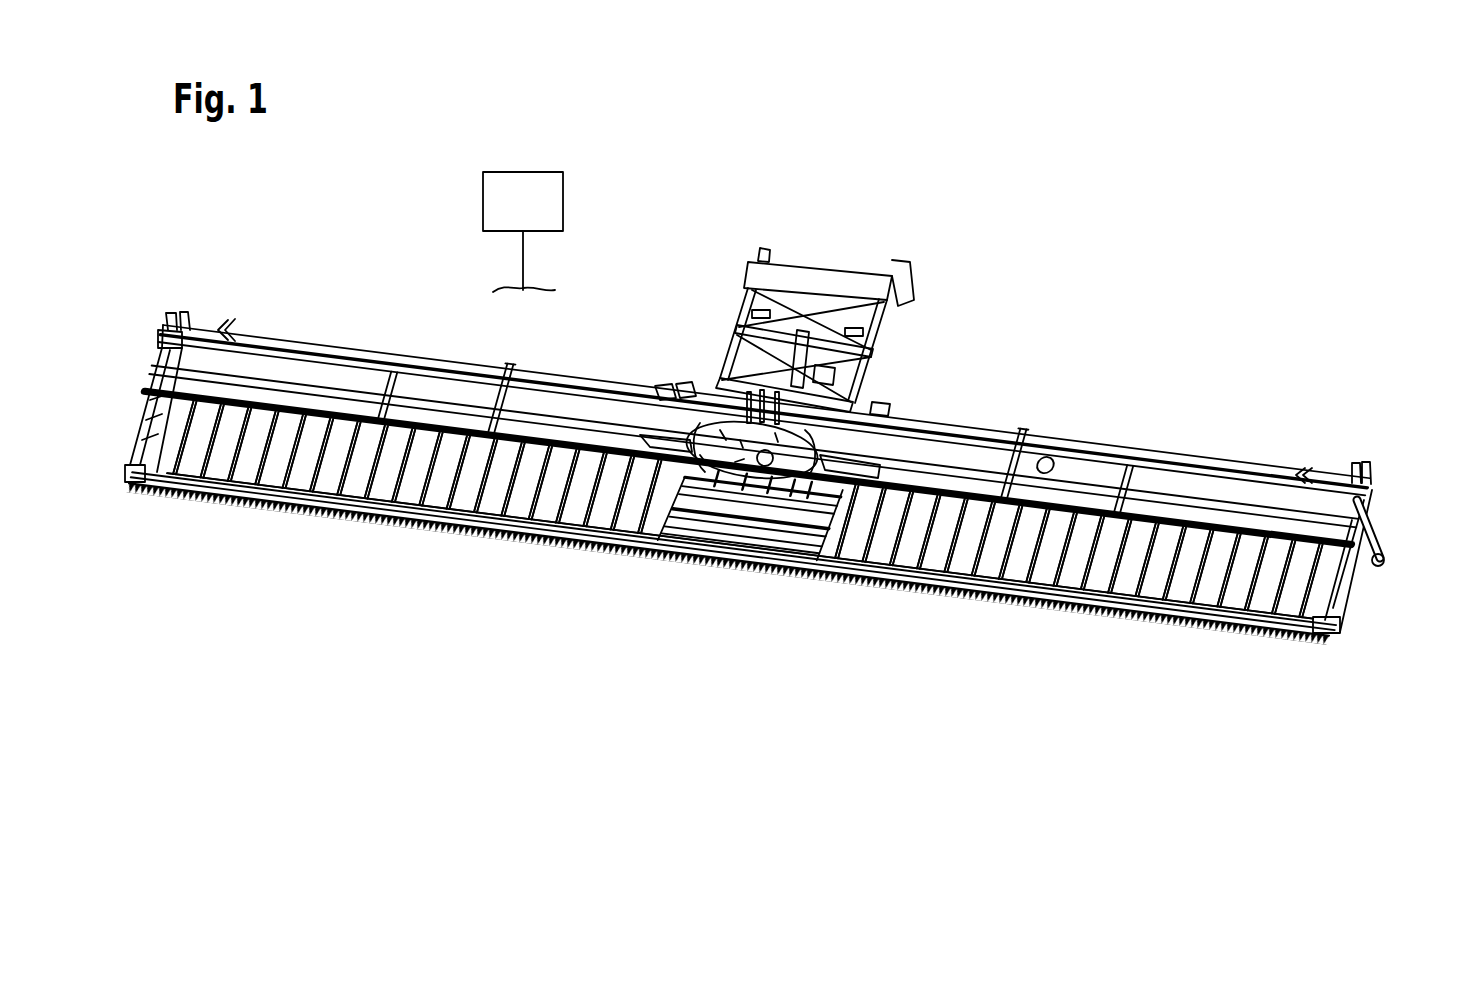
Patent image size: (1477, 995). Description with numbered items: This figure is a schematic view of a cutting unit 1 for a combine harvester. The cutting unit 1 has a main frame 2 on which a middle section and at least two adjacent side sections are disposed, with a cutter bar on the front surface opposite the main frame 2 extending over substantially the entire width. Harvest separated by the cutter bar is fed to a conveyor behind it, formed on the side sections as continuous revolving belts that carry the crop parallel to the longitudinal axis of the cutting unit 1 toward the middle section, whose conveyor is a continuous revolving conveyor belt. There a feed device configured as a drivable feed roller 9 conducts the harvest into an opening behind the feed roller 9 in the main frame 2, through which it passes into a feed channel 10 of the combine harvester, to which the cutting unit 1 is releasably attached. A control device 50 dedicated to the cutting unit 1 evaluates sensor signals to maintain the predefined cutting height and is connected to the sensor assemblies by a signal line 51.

The cutting unit 1 is at (388, 622).
The main frame 2 is at (1384, 536).
The feed roller 9 is at (795, 456).
The feed channel 10 is at (847, 262).
The control device 50 is at (523, 172).
The signal line 51 is at (523, 266).